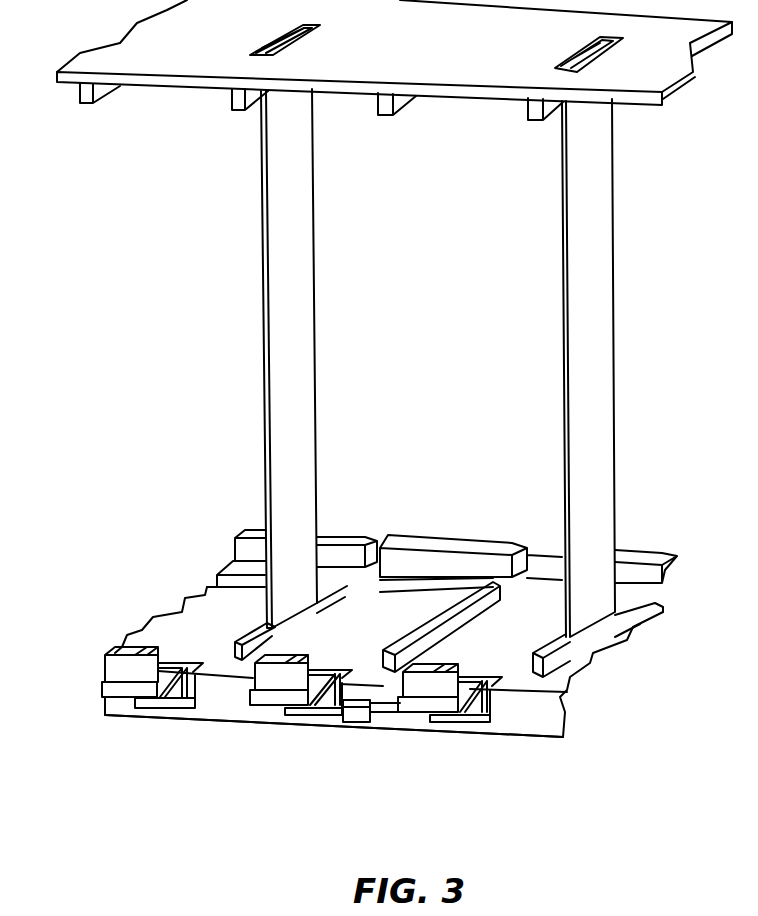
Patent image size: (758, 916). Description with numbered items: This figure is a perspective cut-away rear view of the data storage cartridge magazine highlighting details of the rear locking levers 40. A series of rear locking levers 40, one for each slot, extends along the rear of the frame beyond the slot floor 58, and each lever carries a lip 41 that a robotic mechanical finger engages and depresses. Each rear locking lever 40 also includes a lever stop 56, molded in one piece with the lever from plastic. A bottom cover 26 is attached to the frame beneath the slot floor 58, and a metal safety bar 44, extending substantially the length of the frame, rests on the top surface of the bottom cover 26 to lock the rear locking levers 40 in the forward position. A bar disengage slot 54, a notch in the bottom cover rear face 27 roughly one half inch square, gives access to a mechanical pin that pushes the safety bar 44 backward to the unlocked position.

The bottom cover 26 is at (127, 727).
The bottom cover rear face 27 is at (357, 718).
The rear locking lever 40 is at (240, 703).
The lip 41 is at (118, 652).
The safety bar 44 is at (462, 718).
The bar disengage slot 54 is at (387, 740).
The lever stop 56 is at (493, 710).
The slot floor 58 is at (510, 643).